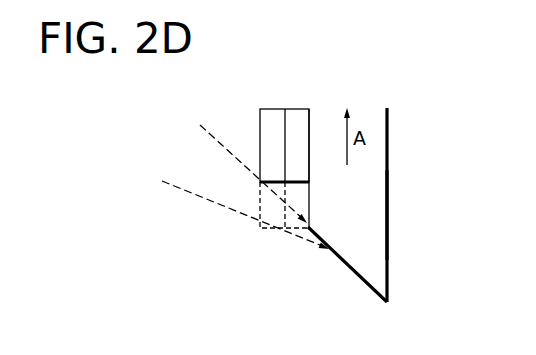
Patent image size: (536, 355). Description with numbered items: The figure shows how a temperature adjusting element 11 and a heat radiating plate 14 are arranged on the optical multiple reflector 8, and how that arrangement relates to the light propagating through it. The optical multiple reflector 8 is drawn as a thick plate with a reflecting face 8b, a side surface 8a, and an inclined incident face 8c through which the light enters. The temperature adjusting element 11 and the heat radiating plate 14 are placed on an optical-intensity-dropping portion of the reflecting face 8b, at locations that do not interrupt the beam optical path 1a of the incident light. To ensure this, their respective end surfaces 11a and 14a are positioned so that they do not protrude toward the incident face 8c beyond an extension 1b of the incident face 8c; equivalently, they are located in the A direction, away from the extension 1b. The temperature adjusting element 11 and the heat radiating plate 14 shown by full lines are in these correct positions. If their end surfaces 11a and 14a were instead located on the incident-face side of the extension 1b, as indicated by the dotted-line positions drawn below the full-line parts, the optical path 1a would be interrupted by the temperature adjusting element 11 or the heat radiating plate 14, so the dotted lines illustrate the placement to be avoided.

The beam optical path 1a is at (190, 197).
The extension of the incident face 1b is at (215, 141).
The optical multiple reflector 8 is at (370, 170).
The side surface of holding member 8a is at (387, 213).
The reflecting face 8b is at (310, 130).
The incident face 8c is at (353, 272).
The temperature adjusting element 11 is at (292, 133).
The end surface of temperature adjusting element 11a is at (297, 185).
The heat radiating plate 14 is at (272, 132).
The end surface of heat radiating plate 14a is at (277, 187).